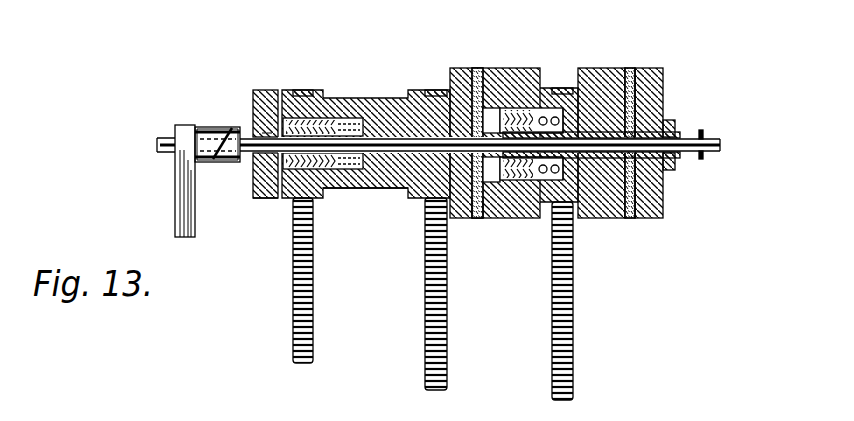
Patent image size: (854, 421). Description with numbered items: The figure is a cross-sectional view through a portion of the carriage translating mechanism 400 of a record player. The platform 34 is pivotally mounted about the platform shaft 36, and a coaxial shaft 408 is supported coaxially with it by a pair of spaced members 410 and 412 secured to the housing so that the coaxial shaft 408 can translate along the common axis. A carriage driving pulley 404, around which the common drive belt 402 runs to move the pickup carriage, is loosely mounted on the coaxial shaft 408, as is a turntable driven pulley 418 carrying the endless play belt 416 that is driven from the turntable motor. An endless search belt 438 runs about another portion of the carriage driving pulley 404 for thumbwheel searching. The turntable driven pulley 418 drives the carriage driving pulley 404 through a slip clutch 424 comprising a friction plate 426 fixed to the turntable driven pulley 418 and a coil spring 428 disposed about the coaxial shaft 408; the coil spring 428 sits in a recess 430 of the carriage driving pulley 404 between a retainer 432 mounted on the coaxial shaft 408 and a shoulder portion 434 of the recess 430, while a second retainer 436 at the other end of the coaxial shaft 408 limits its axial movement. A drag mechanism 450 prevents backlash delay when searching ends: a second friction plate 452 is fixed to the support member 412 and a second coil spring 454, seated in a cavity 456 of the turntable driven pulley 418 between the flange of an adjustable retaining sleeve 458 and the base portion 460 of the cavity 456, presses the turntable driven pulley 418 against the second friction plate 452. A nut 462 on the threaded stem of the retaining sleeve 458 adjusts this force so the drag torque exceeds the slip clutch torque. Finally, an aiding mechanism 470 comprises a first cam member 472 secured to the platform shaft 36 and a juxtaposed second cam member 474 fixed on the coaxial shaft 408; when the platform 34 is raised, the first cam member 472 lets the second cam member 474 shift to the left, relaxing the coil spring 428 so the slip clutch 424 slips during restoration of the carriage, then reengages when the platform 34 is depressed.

The platform 34 is at (178, 195).
The platform shaft 36 is at (157, 143).
The torque tool assembly 400 is at (218, 307).
The common drive belt 402 is at (313, 250).
The carriage driving pulley 404 is at (386, 98).
The coaxial shaft 408 is at (703, 130).
The spaced member 410 is at (264, 90).
The support member 412 is at (660, 68).
The endless play belt 416 is at (573, 306).
The turntable driven pulley 418 is at (599, 68).
The slip clutch 424 is at (477, 60).
The friction plate 426 is at (480, 213).
The coil spring 428 is at (320, 120).
The recess 430 is at (266, 199).
The retainer 432 is at (270, 133).
The shoulder portion 434 is at (372, 172).
The second retainer 436 is at (703, 159).
The endless search belt 438 is at (447, 312).
The drag mechanism 450 is at (633, 221).
The second friction plate 452 is at (630, 70).
The second coil spring 454 is at (544, 108).
The cavity 456 is at (503, 181).
The adjustable retaining sleeve 458 is at (506, 110).
The base portion 460 is at (566, 176).
The nut 462 is at (670, 119).
The aiding mechanism 470 is at (206, 121).
The first cam member 472 is at (197, 128).
The second cam member 474 is at (225, 163).